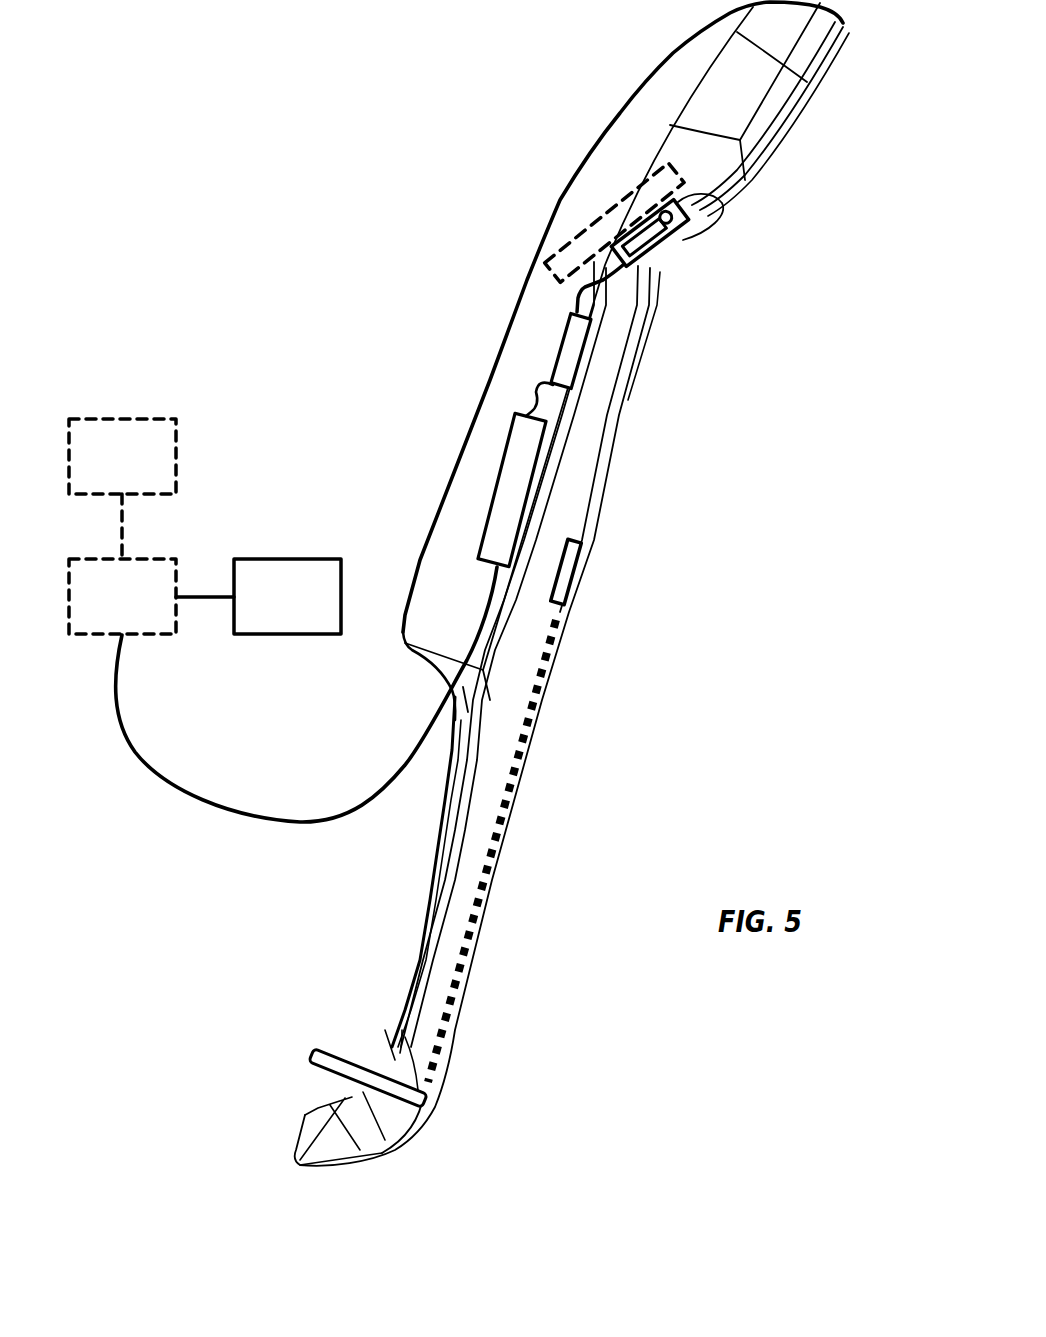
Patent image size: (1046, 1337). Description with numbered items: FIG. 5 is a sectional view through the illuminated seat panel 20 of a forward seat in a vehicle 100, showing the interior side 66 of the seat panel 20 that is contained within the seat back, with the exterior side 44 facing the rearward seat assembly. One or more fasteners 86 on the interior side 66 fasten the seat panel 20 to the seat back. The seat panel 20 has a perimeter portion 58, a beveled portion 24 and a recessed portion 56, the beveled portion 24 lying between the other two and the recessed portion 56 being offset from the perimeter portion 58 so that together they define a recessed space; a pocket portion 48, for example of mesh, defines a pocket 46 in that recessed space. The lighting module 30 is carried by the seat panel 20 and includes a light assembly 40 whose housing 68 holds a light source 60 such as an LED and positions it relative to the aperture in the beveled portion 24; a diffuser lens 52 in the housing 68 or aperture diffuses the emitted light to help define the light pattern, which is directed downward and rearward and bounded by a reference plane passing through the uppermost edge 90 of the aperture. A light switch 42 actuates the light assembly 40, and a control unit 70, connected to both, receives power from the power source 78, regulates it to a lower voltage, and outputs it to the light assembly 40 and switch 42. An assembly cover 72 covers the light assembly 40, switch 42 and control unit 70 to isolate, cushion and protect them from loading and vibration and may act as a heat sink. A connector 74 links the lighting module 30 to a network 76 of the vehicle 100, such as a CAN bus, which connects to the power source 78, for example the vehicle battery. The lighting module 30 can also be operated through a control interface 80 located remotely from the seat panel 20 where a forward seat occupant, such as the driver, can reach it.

The vehicle 100 is at (170, 150).
The seat panel 20 is at (797, 423).
The lighting module 30 is at (547, 153).
The perimeter portion 58 is at (798, 112).
The assembly cover 72 is at (603, 226).
The housing 68 is at (695, 198).
The light source 60 is at (690, 213).
The uppermost edge of aperture 90 is at (688, 248).
The light assembly 40 is at (693, 290).
The diffuser lens 52 is at (663, 268).
The beveled portion 24 is at (637, 330).
The light switch 42 is at (558, 350).
The control unit 70 is at (500, 480).
The recessed portion 56 is at (565, 437).
The pocket 46 is at (550, 535).
The pocket portion 48 is at (560, 617).
The interior side of seat panel 66 is at (397, 930).
The exterior side of seat panel 44 is at (507, 987).
The fastener 86 is at (310, 1052).
The connector 74 is at (178, 790).
The network 76 is at (122, 596).
The power source 78 is at (287, 596).
The control interface 80 is at (122, 456).